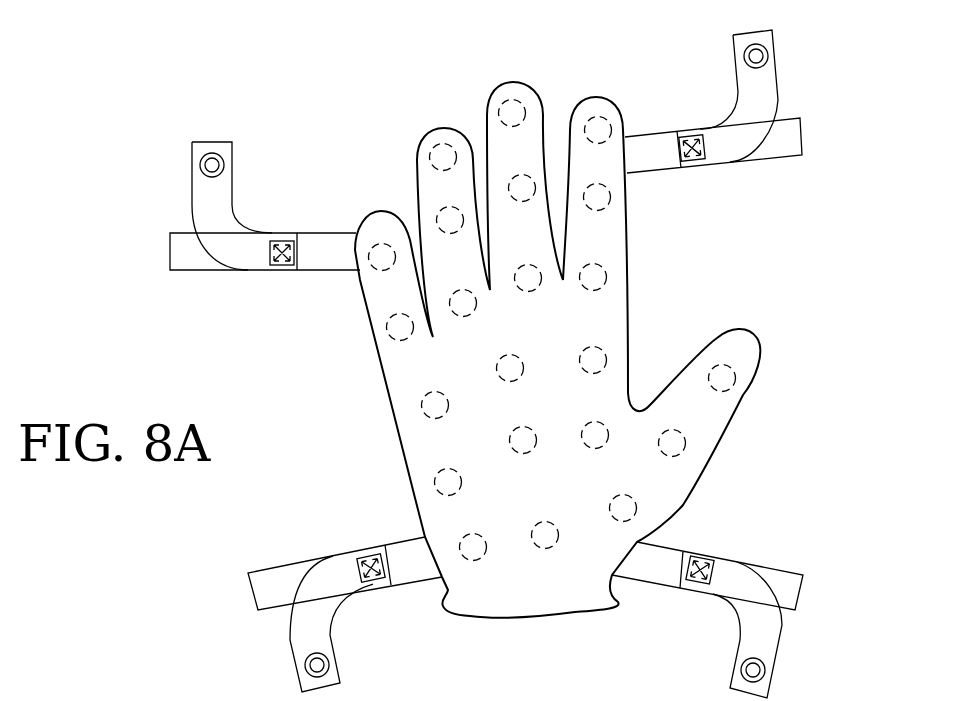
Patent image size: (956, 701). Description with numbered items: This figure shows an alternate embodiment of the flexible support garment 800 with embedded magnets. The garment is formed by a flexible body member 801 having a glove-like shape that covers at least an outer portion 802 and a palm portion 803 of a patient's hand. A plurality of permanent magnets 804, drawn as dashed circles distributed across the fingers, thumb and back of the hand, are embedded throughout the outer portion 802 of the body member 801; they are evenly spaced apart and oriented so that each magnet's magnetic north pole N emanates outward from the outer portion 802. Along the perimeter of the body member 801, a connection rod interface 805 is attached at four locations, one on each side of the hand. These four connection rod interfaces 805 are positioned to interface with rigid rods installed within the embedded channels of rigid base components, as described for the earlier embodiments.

The flexible support garment 800 is at (316, 124).
The flexible body member 801 is at (743, 330).
The outer portion 802 is at (710, 408).
The palm portion 803 is at (670, 478).
The permanent magnets 804 is at (511, 108).
The connection rod interface 805 is at (208, 193).